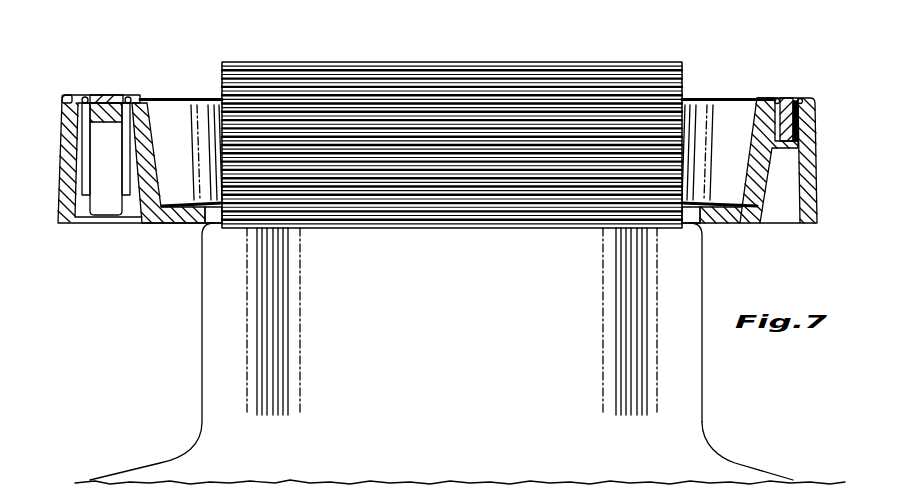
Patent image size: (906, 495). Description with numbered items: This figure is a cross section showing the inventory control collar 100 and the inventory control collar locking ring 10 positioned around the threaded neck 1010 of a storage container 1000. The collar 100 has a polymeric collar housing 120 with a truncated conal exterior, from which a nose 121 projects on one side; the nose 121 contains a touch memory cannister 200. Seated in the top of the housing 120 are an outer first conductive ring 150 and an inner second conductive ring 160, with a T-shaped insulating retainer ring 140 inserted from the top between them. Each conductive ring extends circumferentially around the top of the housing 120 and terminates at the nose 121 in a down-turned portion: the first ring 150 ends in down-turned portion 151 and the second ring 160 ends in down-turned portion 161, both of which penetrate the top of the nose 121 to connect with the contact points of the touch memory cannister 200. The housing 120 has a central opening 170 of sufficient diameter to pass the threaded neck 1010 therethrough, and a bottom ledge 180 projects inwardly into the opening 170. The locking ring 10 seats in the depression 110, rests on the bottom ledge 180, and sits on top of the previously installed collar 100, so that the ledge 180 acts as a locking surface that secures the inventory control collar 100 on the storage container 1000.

The inventory control collar locking ring 10 is at (183, 203).
The inventory control collar 100 is at (822, 133).
The depression 110 is at (174, 118).
The collar housing 120 is at (818, 183).
The nose 121 is at (57, 180).
The insulating retainer ring 140 is at (108, 95).
The first conductive ring 150 is at (82, 97).
The down-turned portion 151 is at (83, 198).
The second conductive ring 160 is at (128, 97).
The down-turned portion 161 is at (128, 198).
The central opening 170 is at (699, 125).
The bottom ledge 180 is at (180, 224).
The touch memory cannister 200 is at (100, 152).
The storage container 1000 is at (467, 455).
The threaded neck 1010 is at (402, 80).